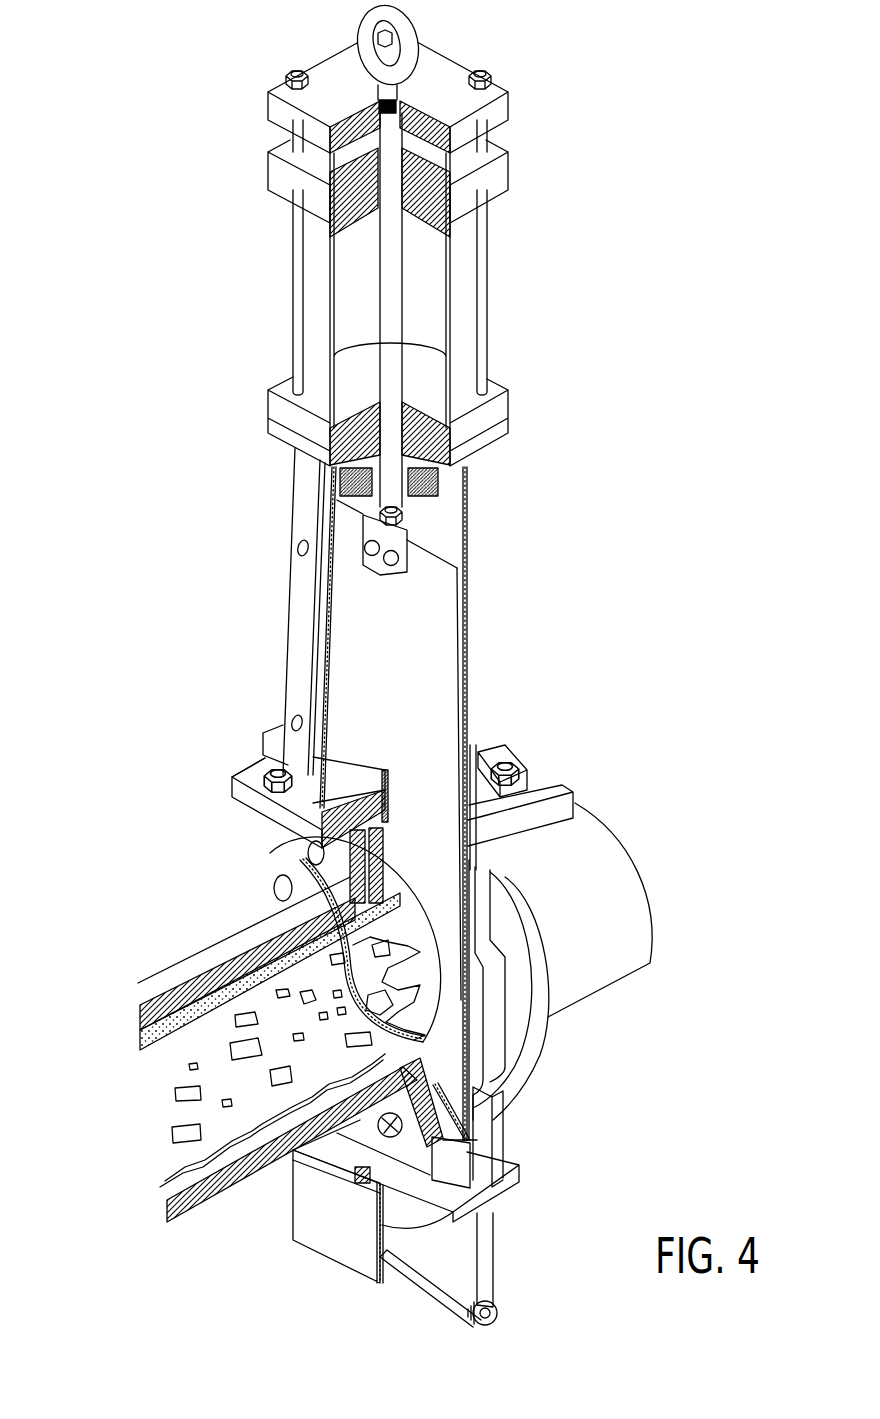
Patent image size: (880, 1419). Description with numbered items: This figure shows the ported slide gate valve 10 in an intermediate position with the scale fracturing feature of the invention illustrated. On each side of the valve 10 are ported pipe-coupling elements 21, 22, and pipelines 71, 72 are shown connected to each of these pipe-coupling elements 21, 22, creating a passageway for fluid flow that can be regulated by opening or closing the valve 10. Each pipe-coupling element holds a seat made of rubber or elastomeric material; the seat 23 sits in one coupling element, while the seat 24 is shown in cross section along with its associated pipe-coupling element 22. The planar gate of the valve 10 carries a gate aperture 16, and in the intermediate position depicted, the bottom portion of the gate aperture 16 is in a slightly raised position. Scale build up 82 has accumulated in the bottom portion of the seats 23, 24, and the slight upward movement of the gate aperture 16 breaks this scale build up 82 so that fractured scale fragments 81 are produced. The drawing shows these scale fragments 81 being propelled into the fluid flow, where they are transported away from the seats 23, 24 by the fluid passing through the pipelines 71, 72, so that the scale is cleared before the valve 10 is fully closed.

The ported slide gate valve 10 is at (547, 700).
The gate aperture 16 is at (425, 1068).
The pipe-coupling element 21 is at (312, 1226).
The pipe-coupling element 22 is at (507, 1038).
The seat 23 is at (493, 1107).
The seat 24 is at (337, 831).
The pipeline 71 is at (202, 965).
The pipeline 72 is at (590, 827).
The scale fragments 81 is at (176, 1096).
The scale build up 82 is at (298, 968).